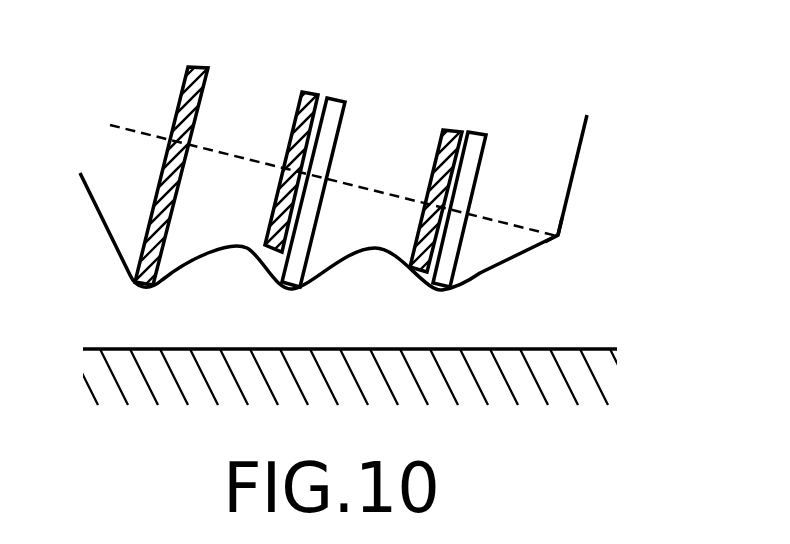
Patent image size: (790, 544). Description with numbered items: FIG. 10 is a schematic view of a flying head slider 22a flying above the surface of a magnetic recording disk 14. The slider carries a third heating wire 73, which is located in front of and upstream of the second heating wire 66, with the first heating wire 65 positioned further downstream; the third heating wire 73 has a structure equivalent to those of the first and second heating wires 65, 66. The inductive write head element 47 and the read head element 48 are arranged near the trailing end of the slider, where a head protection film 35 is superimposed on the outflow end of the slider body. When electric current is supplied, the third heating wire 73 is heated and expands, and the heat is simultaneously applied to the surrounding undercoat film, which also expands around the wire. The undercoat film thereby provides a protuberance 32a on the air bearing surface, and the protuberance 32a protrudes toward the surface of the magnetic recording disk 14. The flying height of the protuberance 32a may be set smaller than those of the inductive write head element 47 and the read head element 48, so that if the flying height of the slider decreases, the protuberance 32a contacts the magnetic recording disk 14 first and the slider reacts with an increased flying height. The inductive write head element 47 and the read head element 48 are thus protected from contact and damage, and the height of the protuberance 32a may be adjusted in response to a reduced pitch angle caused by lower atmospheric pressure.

The third heating wire 73 is at (189, 68).
The second heating wire 66 is at (302, 93).
The first heating wire 65 is at (444, 132).
The read head element 48 is at (332, 157).
The inductive write head element 47 is at (470, 201).
The flying head slider 22a is at (583, 138).
The head protection film 35 is at (560, 234).
The protuberance 32a is at (110, 240).
The magnetic recording disk 14 is at (188, 349).